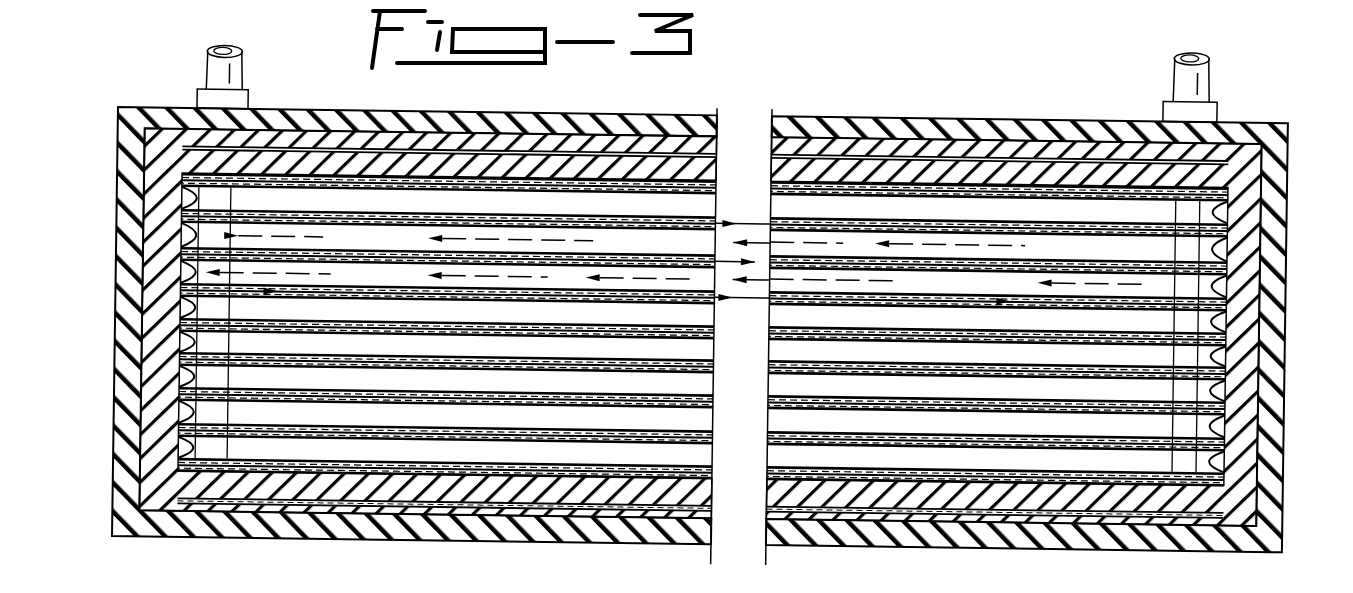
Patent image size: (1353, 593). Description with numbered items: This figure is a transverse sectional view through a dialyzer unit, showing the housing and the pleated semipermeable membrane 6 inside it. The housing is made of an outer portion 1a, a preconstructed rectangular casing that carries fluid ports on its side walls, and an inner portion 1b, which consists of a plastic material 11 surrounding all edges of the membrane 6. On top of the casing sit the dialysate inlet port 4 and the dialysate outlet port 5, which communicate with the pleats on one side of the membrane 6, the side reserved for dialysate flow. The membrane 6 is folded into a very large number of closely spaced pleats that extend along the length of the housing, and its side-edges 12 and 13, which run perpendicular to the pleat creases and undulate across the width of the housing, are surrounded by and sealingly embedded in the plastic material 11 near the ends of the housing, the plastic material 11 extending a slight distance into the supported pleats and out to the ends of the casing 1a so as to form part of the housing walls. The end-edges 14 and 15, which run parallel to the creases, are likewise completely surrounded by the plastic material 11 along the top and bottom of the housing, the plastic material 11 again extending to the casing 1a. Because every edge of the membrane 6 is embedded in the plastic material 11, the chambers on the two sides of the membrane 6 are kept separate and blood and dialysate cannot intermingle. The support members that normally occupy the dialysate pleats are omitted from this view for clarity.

The outer portion 1a is at (826, 108).
The inner portion 1b is at (933, 136).
The dialysate inlet port 4 is at (1203, 96).
The dialysate outlet port 5 is at (200, 98).
The semipermeable membrane 6 is at (794, 402).
The plastic material 11 is at (648, 123).
The side-edge 12 is at (188, 285).
The side-edge 13 is at (1243, 346).
The end-edge 14 is at (1040, 117).
The end-edge 15 is at (662, 500).